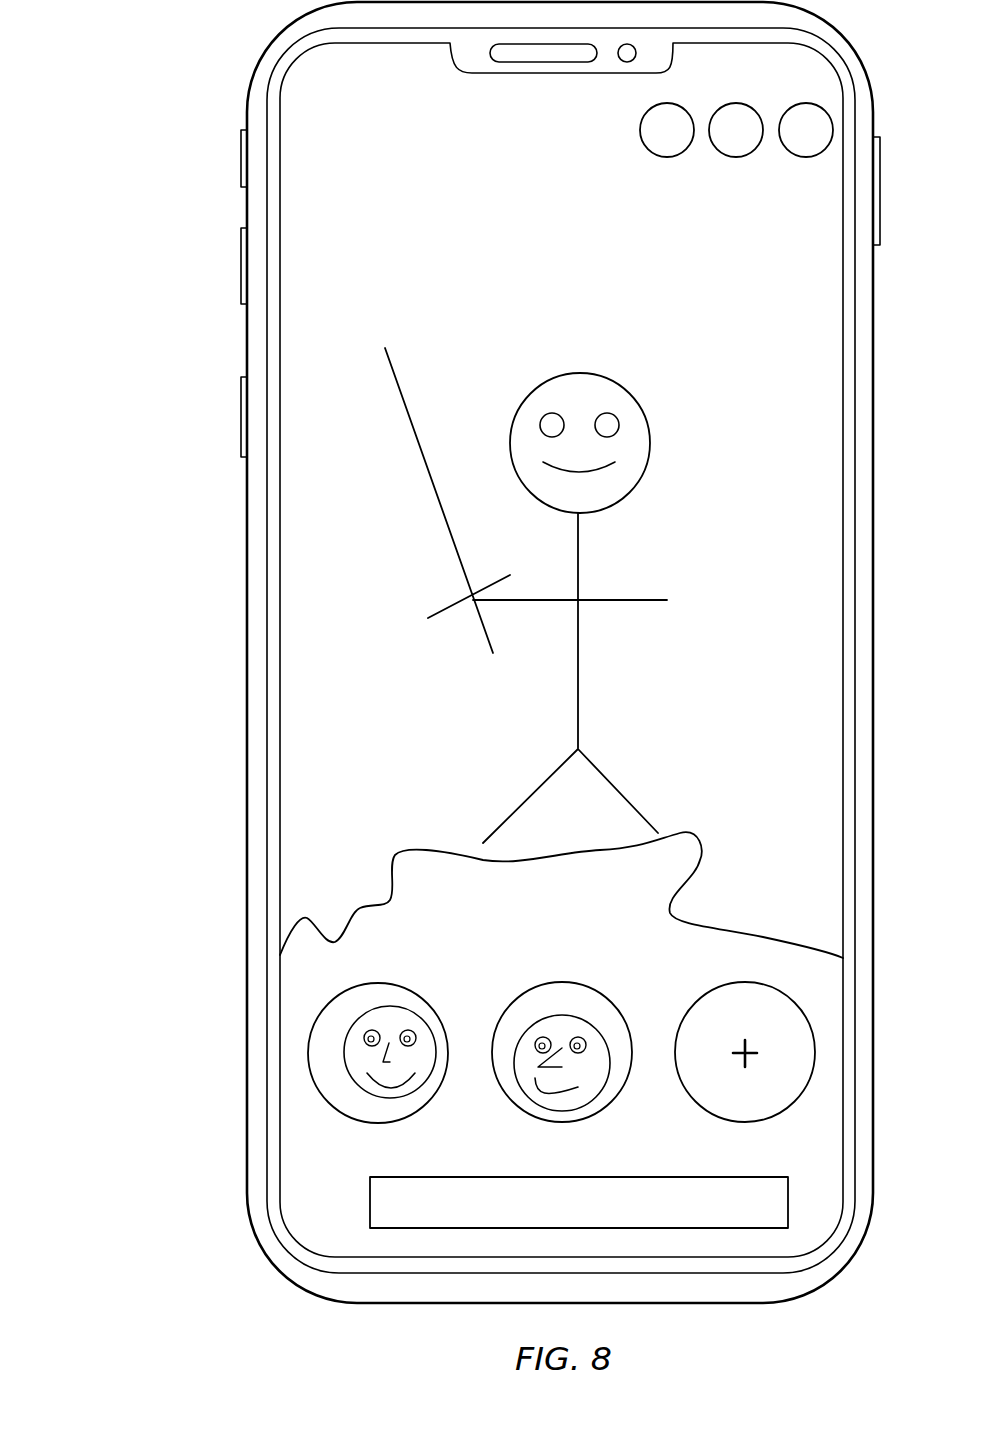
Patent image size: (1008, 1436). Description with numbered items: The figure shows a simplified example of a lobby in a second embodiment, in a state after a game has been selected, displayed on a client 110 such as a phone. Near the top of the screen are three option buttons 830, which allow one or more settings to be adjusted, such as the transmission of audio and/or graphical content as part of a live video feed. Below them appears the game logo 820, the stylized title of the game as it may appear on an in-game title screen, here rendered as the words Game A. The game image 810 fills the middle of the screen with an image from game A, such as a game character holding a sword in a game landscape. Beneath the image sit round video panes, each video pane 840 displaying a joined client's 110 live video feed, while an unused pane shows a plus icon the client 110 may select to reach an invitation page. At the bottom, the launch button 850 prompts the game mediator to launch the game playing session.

The client 110 is at (247, 487).
The game image 810 is at (547, 680).
The game logo 820 is at (520, 262).
The option buttons 830 is at (648, 115).
The video pane 840 is at (320, 1063).
The launch button 850 is at (388, 1202).